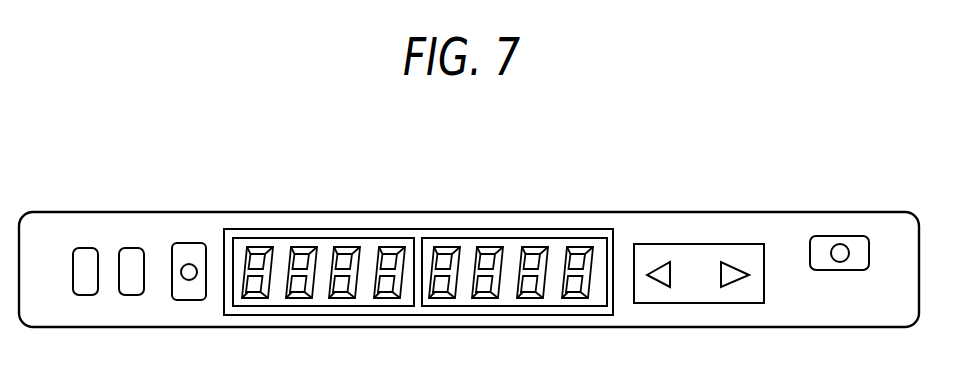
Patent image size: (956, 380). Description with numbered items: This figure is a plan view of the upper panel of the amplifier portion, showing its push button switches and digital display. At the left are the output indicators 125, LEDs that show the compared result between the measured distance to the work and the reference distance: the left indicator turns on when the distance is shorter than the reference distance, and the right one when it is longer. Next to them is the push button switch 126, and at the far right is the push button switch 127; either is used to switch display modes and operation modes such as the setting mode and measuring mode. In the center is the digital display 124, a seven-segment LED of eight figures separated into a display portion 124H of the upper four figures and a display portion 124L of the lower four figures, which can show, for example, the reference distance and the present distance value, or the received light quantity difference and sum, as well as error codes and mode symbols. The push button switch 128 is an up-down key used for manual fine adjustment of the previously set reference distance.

The digital display 124 is at (418, 227).
The display portion 124H is at (340, 238).
The display portion 124L is at (500, 238).
The output indicator 125 is at (86, 248).
The push button switch 126 is at (188, 243).
The push button switch 127 is at (849, 236).
The push button switch 128 is at (678, 245).